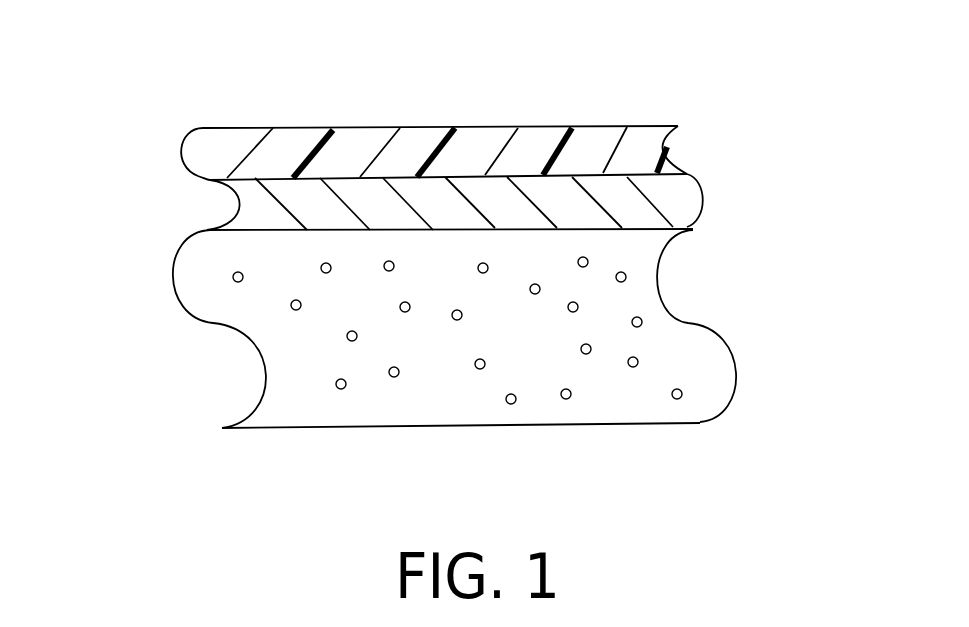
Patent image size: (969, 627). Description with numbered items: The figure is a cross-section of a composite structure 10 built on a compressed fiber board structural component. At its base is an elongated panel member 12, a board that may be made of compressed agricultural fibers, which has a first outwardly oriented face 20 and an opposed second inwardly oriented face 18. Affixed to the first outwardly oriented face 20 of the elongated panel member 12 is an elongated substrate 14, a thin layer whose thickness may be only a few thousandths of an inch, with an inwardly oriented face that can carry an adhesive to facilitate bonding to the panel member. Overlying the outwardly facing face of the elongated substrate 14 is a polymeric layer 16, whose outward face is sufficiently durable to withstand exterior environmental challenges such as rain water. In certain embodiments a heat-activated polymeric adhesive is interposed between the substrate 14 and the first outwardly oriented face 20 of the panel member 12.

The composite structure 10 is at (179, 386).
The elongated panel member 12 is at (733, 377).
The elongated substrate 14 is at (703, 207).
The polymeric layer 16 is at (483, 128).
The second inwardly oriented face 18 is at (627, 423).
The first outwardly oriented face 20 is at (257, 228).